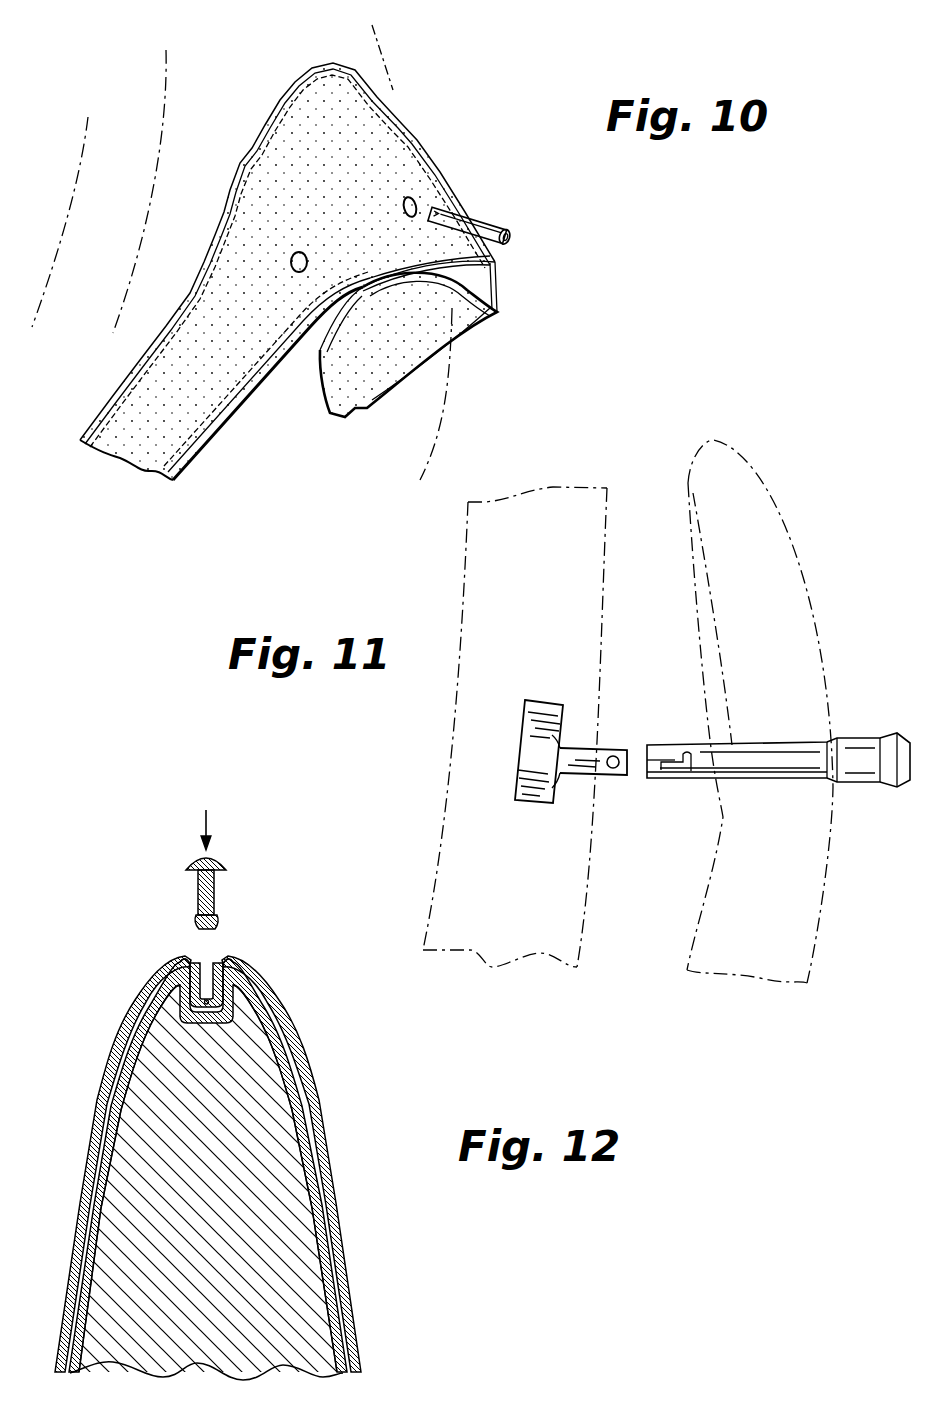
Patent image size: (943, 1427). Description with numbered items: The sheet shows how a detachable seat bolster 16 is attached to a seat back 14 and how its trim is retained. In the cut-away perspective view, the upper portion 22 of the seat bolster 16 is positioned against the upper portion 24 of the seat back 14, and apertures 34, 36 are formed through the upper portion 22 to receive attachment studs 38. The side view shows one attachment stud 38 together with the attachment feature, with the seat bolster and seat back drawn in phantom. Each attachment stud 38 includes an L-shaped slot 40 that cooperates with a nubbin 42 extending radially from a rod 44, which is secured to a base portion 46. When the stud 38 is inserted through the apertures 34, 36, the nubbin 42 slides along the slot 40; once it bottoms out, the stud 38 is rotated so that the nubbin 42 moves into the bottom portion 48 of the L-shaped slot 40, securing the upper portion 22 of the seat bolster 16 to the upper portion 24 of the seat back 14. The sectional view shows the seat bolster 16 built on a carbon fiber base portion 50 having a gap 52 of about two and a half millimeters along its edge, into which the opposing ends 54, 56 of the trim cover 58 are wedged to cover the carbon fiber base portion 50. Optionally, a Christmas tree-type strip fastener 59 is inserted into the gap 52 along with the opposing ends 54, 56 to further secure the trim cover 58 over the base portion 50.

In FIG. 10, the seat back 14 is at (455, 412).
In FIG. 11, the seat back 14 is at (432, 905).
In FIG. 10, the seat bolster 16 is at (437, 302).
In FIG. 12, the seat bolster 16 is at (367, 1223).
In FIG. 10, the upper portion of the seat bolster 22 is at (423, 137).
In FIG. 11, the upper portion of the seat bolster 22 is at (818, 613).
In FIG. 10, the upper portion of the seat back 24 is at (375, 47).
In FIG. 11, the upper portion of the seat back 24 is at (468, 505).
In FIG. 10, the aperture 34 is at (297, 253).
In FIG. 10, the aperture 36 is at (412, 198).
In FIG. 10, the attachment stud 38 is at (489, 221).
In FIG. 11, the attachment stud 38 is at (856, 740).
In FIG. 11, the L-shaped slot 40 is at (667, 777).
In FIG. 11, the nubbin 42 is at (615, 754).
In FIG. 11, the rod 44 is at (588, 748).
In FIG. 11, the base portion 46 is at (543, 765).
In FIG. 11, the bottom portion of the L-shaped slot 48 is at (684, 752).
In FIG. 12, the carbon fiber base portion 50 is at (265, 1100).
In FIG. 12, the gap 52 is at (235, 985).
In FIG. 12, the opposing end of the trim cover 54 is at (196, 962).
In FIG. 12, the opposing end of the trim cover 56 is at (217, 963).
In FIG. 12, the trim cover 58 is at (83, 1166).
In FIG. 12, the Christmas tree-type strip fastener 59 is at (216, 908).